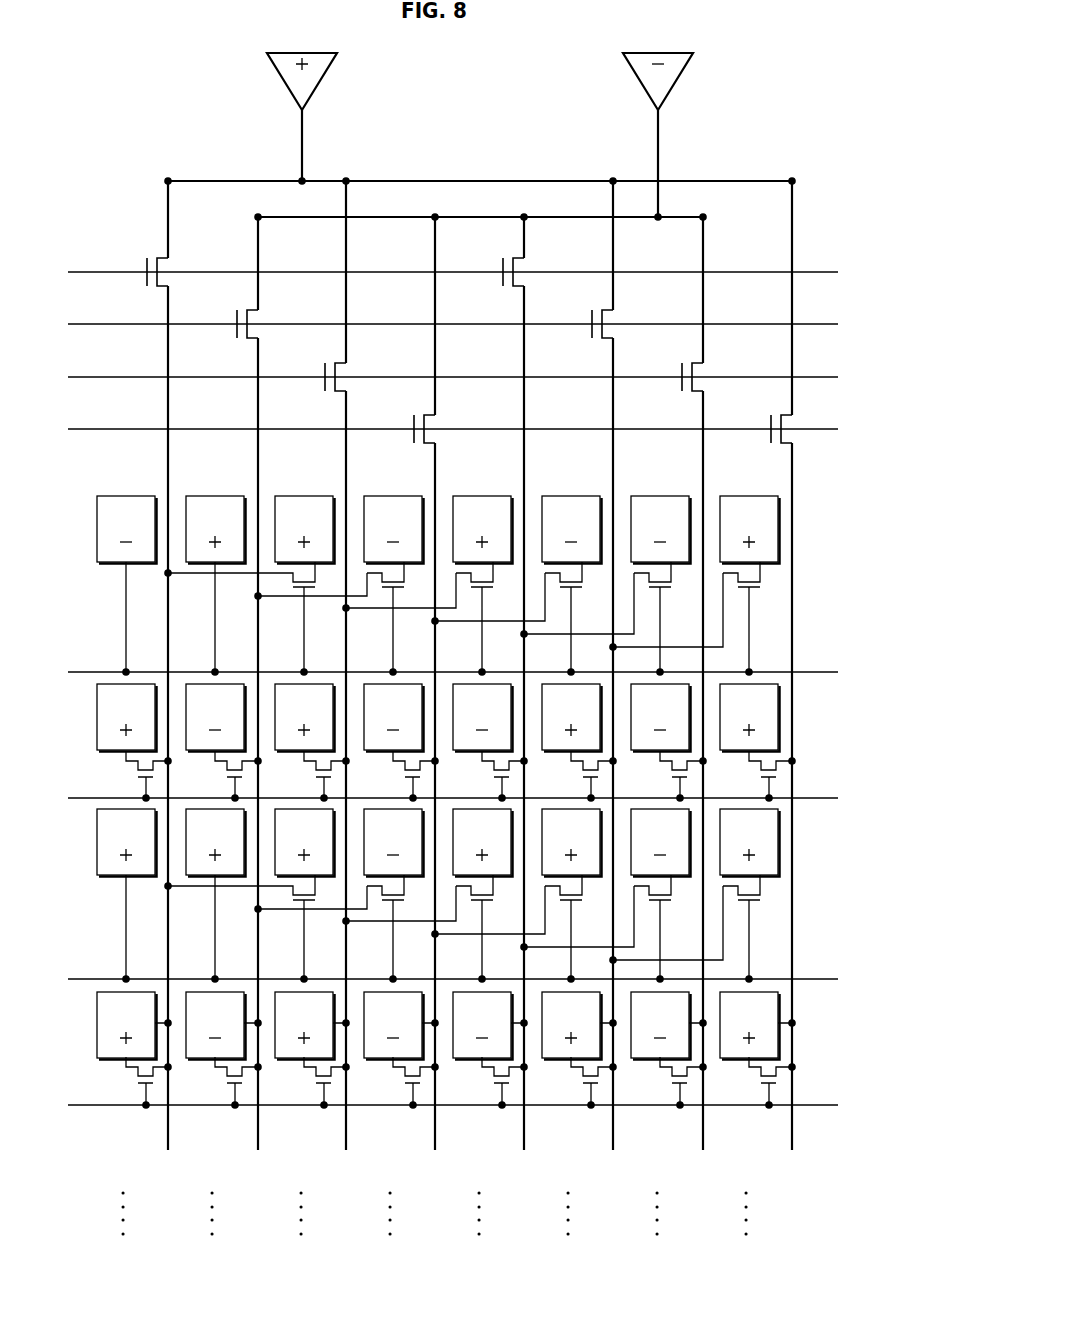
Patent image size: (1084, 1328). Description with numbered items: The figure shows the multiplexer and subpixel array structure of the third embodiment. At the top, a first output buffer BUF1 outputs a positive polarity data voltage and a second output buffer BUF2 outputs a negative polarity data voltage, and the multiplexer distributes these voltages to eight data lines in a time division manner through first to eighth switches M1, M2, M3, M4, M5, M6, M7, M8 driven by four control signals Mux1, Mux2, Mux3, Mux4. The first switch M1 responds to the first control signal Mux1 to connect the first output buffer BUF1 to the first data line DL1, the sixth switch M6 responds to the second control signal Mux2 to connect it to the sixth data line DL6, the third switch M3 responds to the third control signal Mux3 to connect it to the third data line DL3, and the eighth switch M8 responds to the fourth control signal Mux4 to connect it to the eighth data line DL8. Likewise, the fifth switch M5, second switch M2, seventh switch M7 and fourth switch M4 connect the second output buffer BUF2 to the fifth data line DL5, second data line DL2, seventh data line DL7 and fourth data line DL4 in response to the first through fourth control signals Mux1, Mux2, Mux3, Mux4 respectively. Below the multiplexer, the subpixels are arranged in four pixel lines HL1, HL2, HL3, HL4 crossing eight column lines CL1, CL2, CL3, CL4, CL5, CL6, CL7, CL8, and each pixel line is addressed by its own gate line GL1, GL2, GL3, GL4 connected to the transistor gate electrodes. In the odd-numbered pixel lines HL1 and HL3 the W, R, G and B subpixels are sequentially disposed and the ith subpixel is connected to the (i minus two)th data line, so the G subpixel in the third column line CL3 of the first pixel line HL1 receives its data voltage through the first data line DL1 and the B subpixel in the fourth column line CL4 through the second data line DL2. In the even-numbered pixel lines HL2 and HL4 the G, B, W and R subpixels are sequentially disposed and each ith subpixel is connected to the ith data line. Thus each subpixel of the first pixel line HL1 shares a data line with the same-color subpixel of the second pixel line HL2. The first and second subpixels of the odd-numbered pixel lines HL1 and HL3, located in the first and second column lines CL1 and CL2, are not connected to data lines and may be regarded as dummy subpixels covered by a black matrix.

The first output buffer BUF1 is at (312, 75).
The second output buffer BUF2 is at (668, 75).
The first switch M1 is at (174, 263).
The second switch M2 is at (264, 315).
The third switch M3 is at (352, 368).
The fourth switch M4 is at (441, 420).
The fifth switch M5 is at (530, 263).
The sixth switch M6 is at (619, 315).
The seventh switch M7 is at (709, 368).
The eighth switch M8 is at (798, 420).
The first control signal Mux1 is at (424, 272).
The second control signal Mux2 is at (424, 324).
The third control signal Mux3 is at (424, 377).
The fourth control signal Mux4 is at (424, 429).
The gate line GL1 is at (430, 672).
The gate line GL2 is at (430, 798).
The gate line GL3 is at (430, 979).
The gate line GL4 is at (430, 1105).
The first pixel line HL1 is at (815, 526).
The second pixel line HL2 is at (815, 714).
The third pixel line HL3 is at (815, 839).
The fourth pixel line HL4 is at (815, 1021).
The first data line DL1 is at (168, 683).
The second data line DL2 is at (258, 701).
The third data line DL3 is at (346, 683).
The fourth data line DL4 is at (435, 701).
The fifth data line DL5 is at (524, 701).
The sixth data line DL6 is at (613, 683).
The seventh data line DL7 is at (703, 701).
The eighth data line DL8 is at (792, 683).
The first column line CL1 is at (122, 1233).
The second column line CL2 is at (211, 1233).
The third column line CL3 is at (300, 1233).
The fourth column line CL4 is at (389, 1233).
The fifth column line CL5 is at (478, 1233).
The sixth column line CL6 is at (567, 1233).
The seventh column line CL7 is at (656, 1233).
The eighth column line CL8 is at (745, 1233).